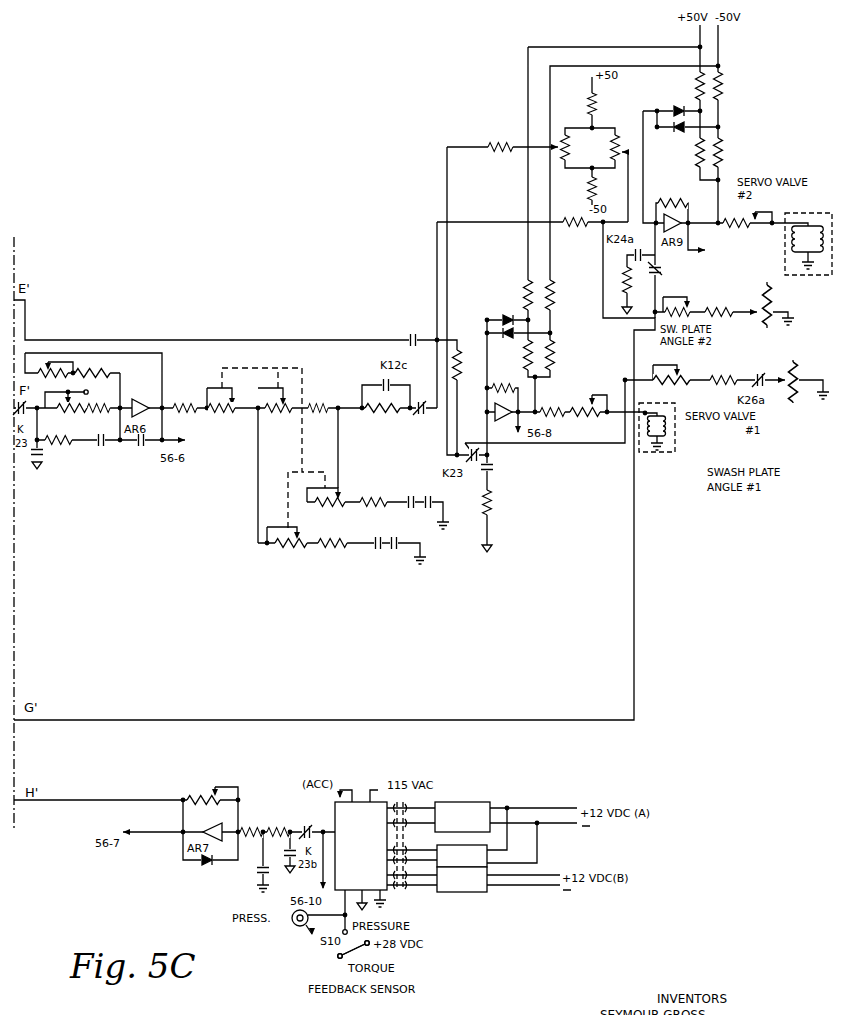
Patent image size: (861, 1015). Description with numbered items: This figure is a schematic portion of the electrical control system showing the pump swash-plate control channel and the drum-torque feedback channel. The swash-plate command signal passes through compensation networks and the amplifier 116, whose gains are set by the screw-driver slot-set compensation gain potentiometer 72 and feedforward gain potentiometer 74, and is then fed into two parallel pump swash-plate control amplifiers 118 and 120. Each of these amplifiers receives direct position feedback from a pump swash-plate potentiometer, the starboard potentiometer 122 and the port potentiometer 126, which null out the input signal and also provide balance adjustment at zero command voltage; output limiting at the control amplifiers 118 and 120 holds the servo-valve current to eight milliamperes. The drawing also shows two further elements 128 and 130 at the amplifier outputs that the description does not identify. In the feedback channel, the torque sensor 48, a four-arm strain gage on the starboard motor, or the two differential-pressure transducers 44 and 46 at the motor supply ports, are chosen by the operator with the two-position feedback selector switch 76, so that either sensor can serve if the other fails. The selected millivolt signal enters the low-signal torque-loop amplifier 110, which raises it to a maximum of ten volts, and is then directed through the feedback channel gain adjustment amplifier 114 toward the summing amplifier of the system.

The compensation gain potentiometer 72 is at (68, 412).
The feedforward gain potentiometer 74 is at (245, 414).
The amplifier AR6 116 is at (138, 400).
The pump swash-plate control amplifier AR8 118 is at (498, 421).
The pump swash-plate control amplifier AR9 120 is at (671, 213).
The swash-plate potentiometer 122 is at (790, 458).
The swash-plate potentiometer 126 is at (750, 338).
The servo valve #1 128 is at (675, 442).
The servo valve #2 130 is at (822, 212).
The feedback channel gain adjustment amplifier AR7 114 is at (206, 830).
The torque-loop amplifier 110 is at (386, 892).
The torque sensor 48 is at (472, 802).
The pressure transducer 44 is at (489, 858).
The pressure transducer 46 is at (476, 893).
The feedback selector switch 76 is at (340, 955).